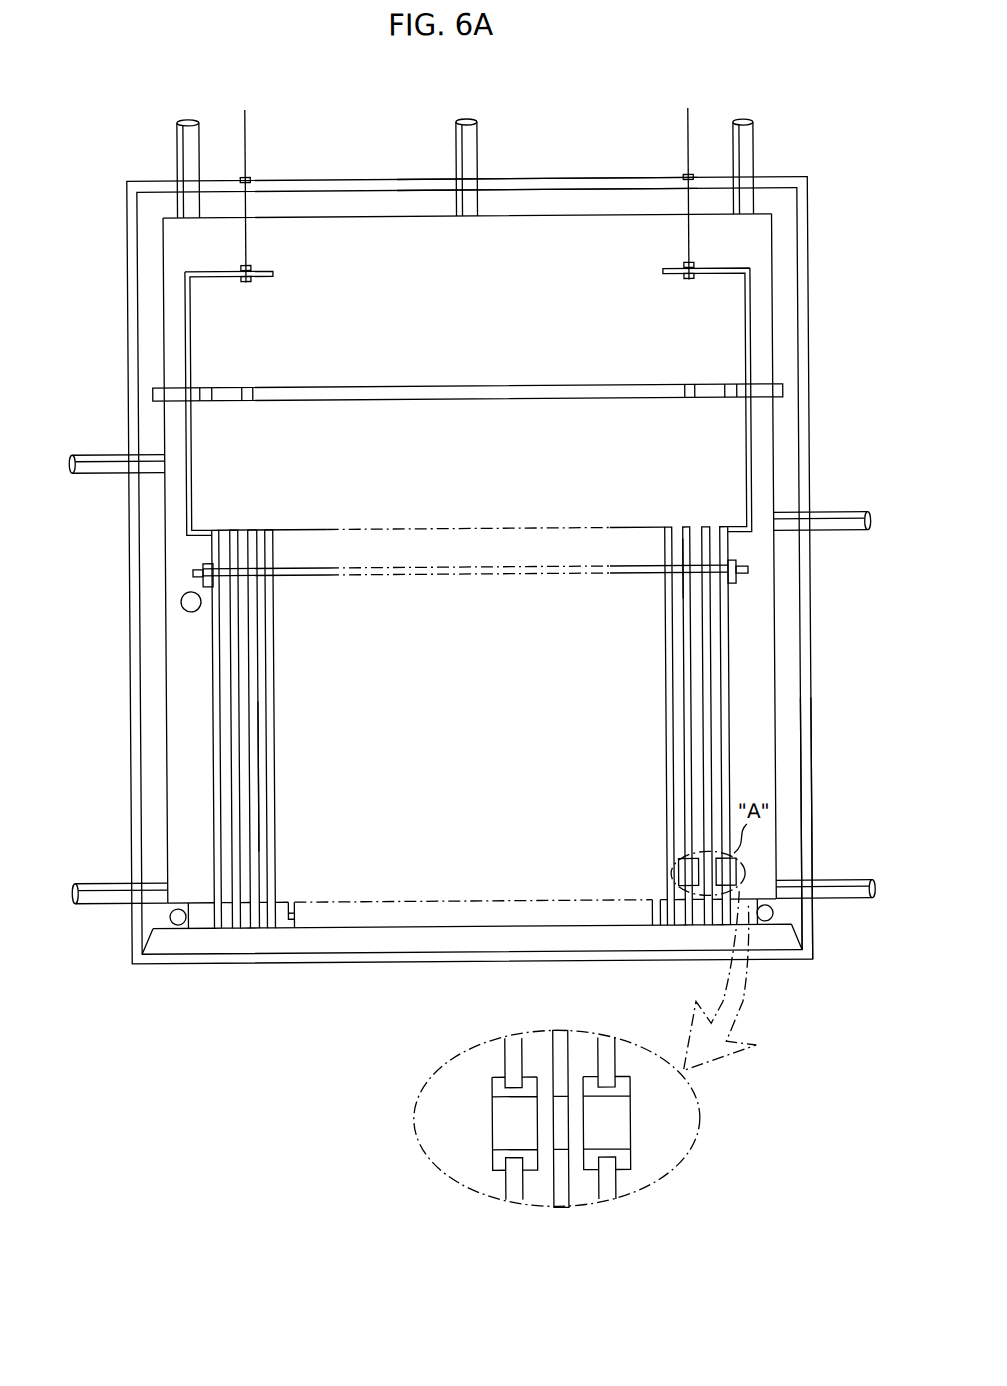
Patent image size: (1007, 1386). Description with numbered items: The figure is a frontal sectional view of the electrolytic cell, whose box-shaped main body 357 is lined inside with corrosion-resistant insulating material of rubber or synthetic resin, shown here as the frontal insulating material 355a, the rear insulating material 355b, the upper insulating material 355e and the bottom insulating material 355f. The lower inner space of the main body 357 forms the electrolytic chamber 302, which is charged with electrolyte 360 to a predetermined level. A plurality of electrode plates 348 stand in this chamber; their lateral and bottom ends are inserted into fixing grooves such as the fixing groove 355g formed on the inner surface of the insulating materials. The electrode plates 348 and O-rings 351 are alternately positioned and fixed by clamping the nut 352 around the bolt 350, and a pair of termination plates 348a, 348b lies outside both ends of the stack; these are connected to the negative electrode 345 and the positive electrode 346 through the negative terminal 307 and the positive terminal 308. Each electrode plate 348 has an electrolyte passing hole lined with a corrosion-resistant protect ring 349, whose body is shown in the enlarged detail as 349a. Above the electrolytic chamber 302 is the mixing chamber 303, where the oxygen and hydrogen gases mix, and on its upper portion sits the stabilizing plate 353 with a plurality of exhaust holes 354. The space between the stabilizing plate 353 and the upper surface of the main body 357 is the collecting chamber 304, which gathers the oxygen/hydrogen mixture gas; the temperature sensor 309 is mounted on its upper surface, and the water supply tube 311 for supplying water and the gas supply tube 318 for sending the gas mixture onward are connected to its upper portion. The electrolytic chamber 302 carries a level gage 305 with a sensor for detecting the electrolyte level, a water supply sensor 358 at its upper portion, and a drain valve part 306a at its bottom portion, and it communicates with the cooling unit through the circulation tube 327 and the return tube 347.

The electrolytic chamber 302 is at (452, 749).
The mixing chamber 303 is at (452, 477).
The collecting chamber 304 is at (452, 307).
The level gage 305 is at (107, 462).
The sealing ring 306a is at (172, 919).
The negative terminal 307 is at (754, 292).
The positive terminal 308 is at (189, 350).
The temperature sensor 309 is at (466, 157).
The water supply tube 311 is at (189, 155).
The gas supply tube 318 is at (751, 155).
The circulation tube 327 is at (181, 606).
The negative electrode 345 is at (689, 128).
The positive electrode 346 is at (250, 128).
The return tube 347 is at (769, 916).
The electrode plates 348 is at (476, 792).
The termination plate 348a is at (724, 665).
The termination plate 348b is at (214, 667).
The protect ring 349 is at (490, 1085).
The spacer body 349a is at (497, 1120).
The bolt 350 is at (298, 576).
The O-ring 351 is at (677, 560).
The nut 352 is at (738, 580).
The stabilizing plate 353 is at (779, 395).
The exhaust holes 354 is at (726, 381).
The insulating material 355a is at (147, 753).
The insulating material 355b is at (795, 820).
The insulating material 355e is at (533, 200).
The insulating material 355f is at (272, 945).
The fixing groove 355g is at (294, 928).
The main body 357 is at (806, 795).
The water supply sensor 358 is at (828, 522).
The electrolyte 360 is at (262, 850).